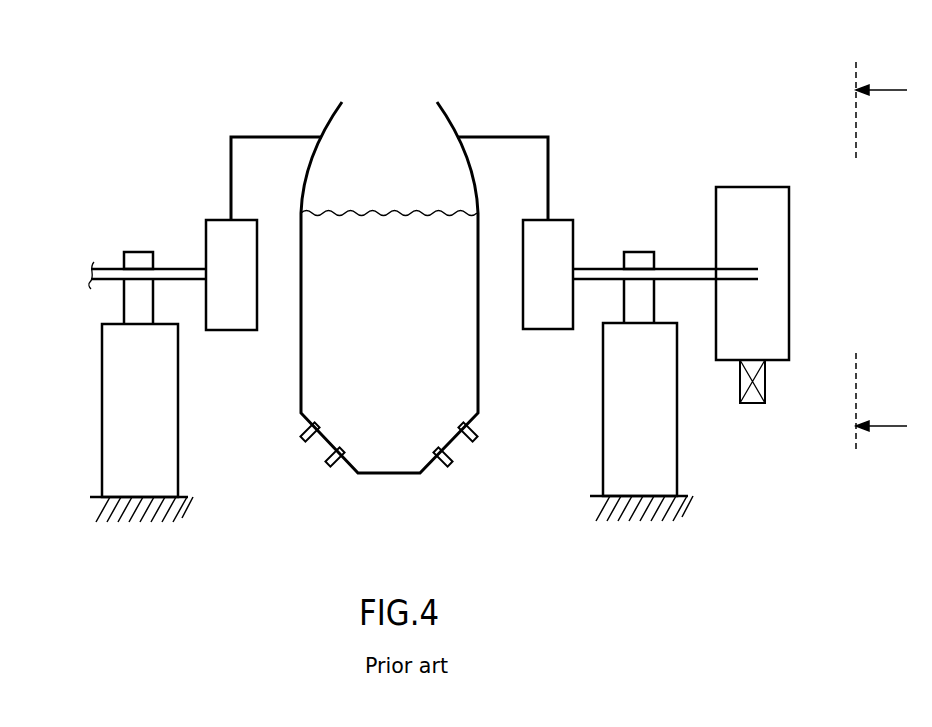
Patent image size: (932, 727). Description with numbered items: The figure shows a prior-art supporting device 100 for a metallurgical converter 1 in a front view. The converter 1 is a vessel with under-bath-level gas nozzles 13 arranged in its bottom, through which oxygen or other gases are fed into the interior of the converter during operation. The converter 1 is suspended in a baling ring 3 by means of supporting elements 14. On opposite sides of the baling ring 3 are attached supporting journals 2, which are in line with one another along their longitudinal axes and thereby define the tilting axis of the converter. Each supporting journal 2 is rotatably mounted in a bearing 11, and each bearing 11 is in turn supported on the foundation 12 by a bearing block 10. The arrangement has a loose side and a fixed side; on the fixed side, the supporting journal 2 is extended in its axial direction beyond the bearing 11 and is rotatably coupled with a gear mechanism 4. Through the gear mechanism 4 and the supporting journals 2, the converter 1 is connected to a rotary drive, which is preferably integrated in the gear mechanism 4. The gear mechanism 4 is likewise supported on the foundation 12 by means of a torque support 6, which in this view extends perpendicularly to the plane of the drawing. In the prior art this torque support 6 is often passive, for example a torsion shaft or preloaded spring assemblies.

The supporting device 100 is at (63, 65).
The converter 1 is at (368, 150).
The supporting journals 2 is at (112, 275).
The baling ring 3 is at (228, 311).
The gear mechanism 4 is at (752, 200).
The torque support 6 is at (760, 383).
The bearing blocks 10 is at (163, 437).
The bearings 11 is at (135, 257).
The foundation 12 is at (127, 513).
The under-bath-level gas nozzles 13 is at (325, 468).
The supporting elements 14 is at (283, 135).